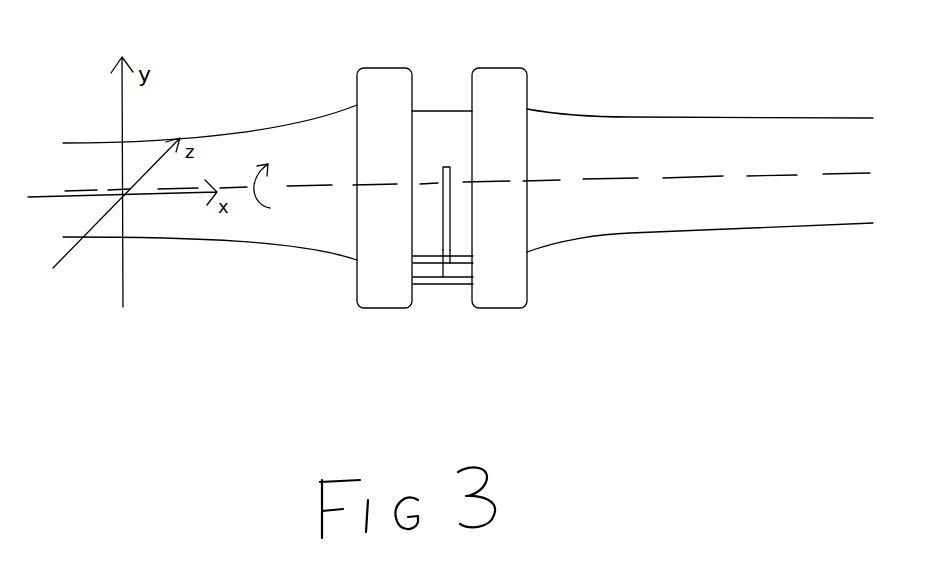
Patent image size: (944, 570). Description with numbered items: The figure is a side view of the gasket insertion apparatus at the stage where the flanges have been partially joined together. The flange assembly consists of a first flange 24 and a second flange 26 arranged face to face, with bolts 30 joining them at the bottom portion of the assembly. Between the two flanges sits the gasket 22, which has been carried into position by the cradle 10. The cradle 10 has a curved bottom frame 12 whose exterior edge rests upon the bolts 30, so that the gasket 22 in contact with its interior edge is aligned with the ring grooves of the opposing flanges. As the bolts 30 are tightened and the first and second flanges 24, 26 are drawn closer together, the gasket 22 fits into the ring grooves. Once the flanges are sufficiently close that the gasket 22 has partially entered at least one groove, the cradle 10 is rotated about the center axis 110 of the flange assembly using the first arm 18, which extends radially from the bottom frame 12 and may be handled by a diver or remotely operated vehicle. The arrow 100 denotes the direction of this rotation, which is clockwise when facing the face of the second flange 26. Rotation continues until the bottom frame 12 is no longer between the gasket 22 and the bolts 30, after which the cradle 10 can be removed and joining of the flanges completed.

The cradle 10 is at (460, 228).
The bottom frame 12 is at (445, 244).
The first arm 18 is at (456, 175).
The gasket 22 is at (433, 125).
The first flange 24 is at (503, 80).
The second flange 26 is at (377, 75).
The bolts 30 is at (421, 257).
The arrow 100 is at (262, 210).
The center axis 110 is at (777, 177).